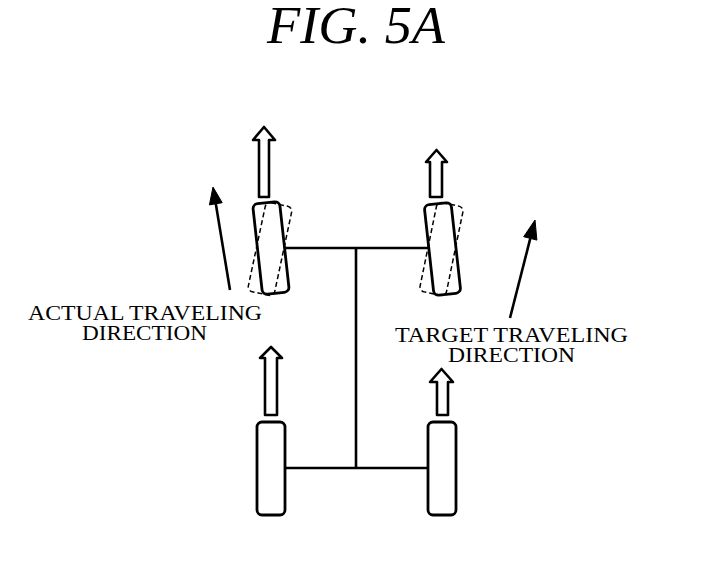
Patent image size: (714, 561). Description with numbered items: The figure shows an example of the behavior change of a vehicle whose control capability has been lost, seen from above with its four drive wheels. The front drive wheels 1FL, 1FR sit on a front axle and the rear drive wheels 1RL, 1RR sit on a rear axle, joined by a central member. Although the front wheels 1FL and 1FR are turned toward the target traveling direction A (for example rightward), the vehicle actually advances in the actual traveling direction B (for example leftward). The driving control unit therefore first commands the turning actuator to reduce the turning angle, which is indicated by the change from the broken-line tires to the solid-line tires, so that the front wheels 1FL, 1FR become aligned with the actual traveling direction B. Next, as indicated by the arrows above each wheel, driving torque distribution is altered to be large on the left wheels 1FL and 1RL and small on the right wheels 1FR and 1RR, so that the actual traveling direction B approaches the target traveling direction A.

The front left drive wheel 1FL is at (287, 265).
The front right drive wheel 1FR is at (458, 268).
The rear left drive wheel 1RL is at (257, 445).
The rear right drive wheel 1RR is at (457, 450).
The target traveling direction A is at (529, 255).
The actual traveling direction B is at (217, 224).